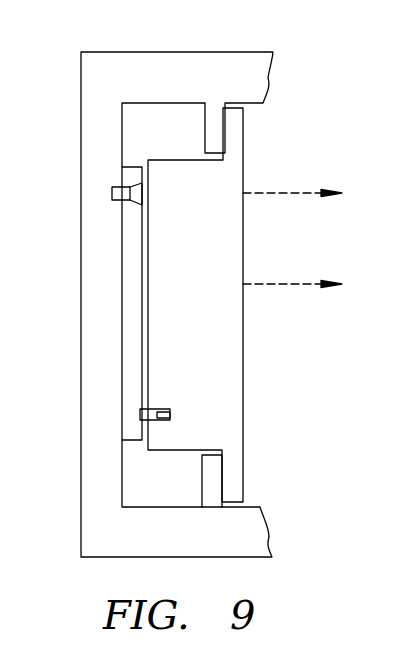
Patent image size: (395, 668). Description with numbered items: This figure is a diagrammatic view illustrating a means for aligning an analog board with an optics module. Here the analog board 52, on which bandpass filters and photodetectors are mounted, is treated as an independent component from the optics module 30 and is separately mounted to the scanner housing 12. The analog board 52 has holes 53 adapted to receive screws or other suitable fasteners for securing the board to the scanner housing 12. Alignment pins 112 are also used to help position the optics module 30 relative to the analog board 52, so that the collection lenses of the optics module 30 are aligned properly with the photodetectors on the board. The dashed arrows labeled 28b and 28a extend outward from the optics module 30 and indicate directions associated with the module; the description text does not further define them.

The scanner housing 12 is at (162, 52).
The optics module 30 is at (227, 385).
The analog board 52 is at (127, 373).
The holes 53 is at (118, 187).
The alignment pins 112 is at (170, 413).
The direction of movement 28b is at (285, 193).
The direction of movement 28a is at (285, 284).